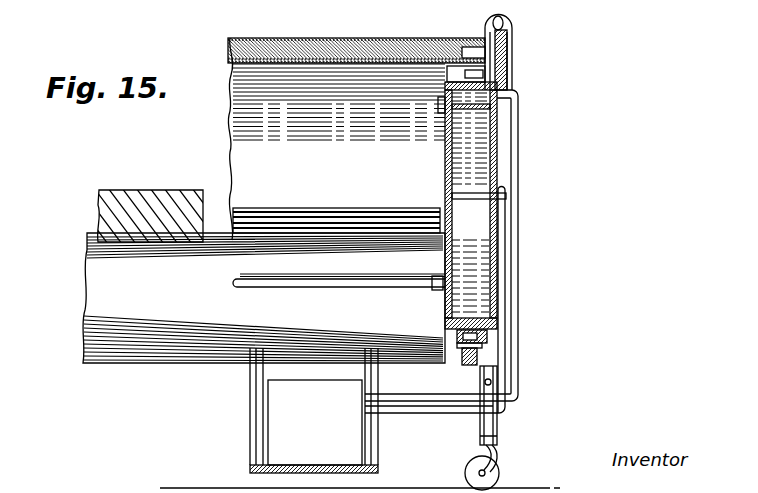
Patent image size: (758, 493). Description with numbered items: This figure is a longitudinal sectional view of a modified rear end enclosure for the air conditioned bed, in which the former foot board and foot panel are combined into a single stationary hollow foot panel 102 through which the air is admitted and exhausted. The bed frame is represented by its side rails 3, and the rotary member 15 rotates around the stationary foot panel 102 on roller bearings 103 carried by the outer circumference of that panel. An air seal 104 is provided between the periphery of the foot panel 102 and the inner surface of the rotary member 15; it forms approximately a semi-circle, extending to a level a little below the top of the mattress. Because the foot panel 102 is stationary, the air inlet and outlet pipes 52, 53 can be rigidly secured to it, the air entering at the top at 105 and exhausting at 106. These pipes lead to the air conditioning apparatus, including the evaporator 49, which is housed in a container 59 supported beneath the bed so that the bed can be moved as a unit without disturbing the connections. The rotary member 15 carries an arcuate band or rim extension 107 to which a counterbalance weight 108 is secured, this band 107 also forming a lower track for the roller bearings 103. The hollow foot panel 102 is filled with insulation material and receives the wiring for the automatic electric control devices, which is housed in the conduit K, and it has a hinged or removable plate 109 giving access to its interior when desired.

The air seal 104 is at (431, 46).
The rotary member 15 is at (249, 115).
The side rails 3 is at (98, 287).
The conduit K is at (255, 284).
The container 59 is at (258, 405).
The evaporator 49 is at (314, 426).
The stationary hollow foot panel 102 is at (444, 155).
The air entrance 105 is at (480, 105).
The hinged or removable plate 109 is at (444, 135).
The air exhaust 106 is at (445, 195).
The roller bearings 103 is at (511, 83).
The arcuate band or rim extension 107 is at (483, 346).
The counterbalance weight 108 is at (477, 358).
The air inlet pipe 52 is at (518, 97).
The air outlet pipe 53 is at (500, 197).